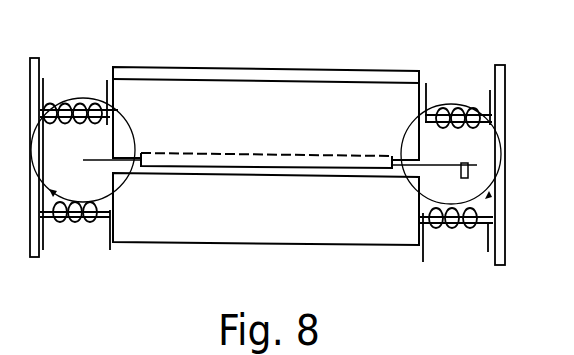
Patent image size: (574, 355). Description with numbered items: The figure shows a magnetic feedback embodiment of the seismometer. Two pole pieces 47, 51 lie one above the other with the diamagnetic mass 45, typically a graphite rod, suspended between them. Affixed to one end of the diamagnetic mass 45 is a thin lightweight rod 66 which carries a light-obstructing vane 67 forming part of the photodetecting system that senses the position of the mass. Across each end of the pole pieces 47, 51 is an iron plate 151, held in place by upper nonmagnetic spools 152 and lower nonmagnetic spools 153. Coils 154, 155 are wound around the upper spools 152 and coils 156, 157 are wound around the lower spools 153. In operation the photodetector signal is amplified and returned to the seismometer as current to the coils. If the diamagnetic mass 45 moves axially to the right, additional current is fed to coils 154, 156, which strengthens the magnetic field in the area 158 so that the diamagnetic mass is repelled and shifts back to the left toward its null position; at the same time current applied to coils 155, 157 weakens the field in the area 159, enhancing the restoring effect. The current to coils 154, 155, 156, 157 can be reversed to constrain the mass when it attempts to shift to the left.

The diamagnetic mass 45 is at (320, 165).
The pole piece 47 is at (288, 120).
The pole piece 51 is at (284, 226).
The lightweight rod 66 is at (430, 166).
The light-obstructing vane 67 is at (472, 175).
The iron plate 151 is at (35, 57).
The upper nonmagnetic spool 152 is at (82, 100).
The lower nonmagnetic spool 153 is at (50, 222).
The coil 154 is at (428, 92).
The coil 155 is at (60, 100).
The coil 156 is at (460, 225).
The coil 157 is at (87, 222).
The magnetic field area 158 is at (412, 165).
The magnetic field area 159 is at (124, 177).